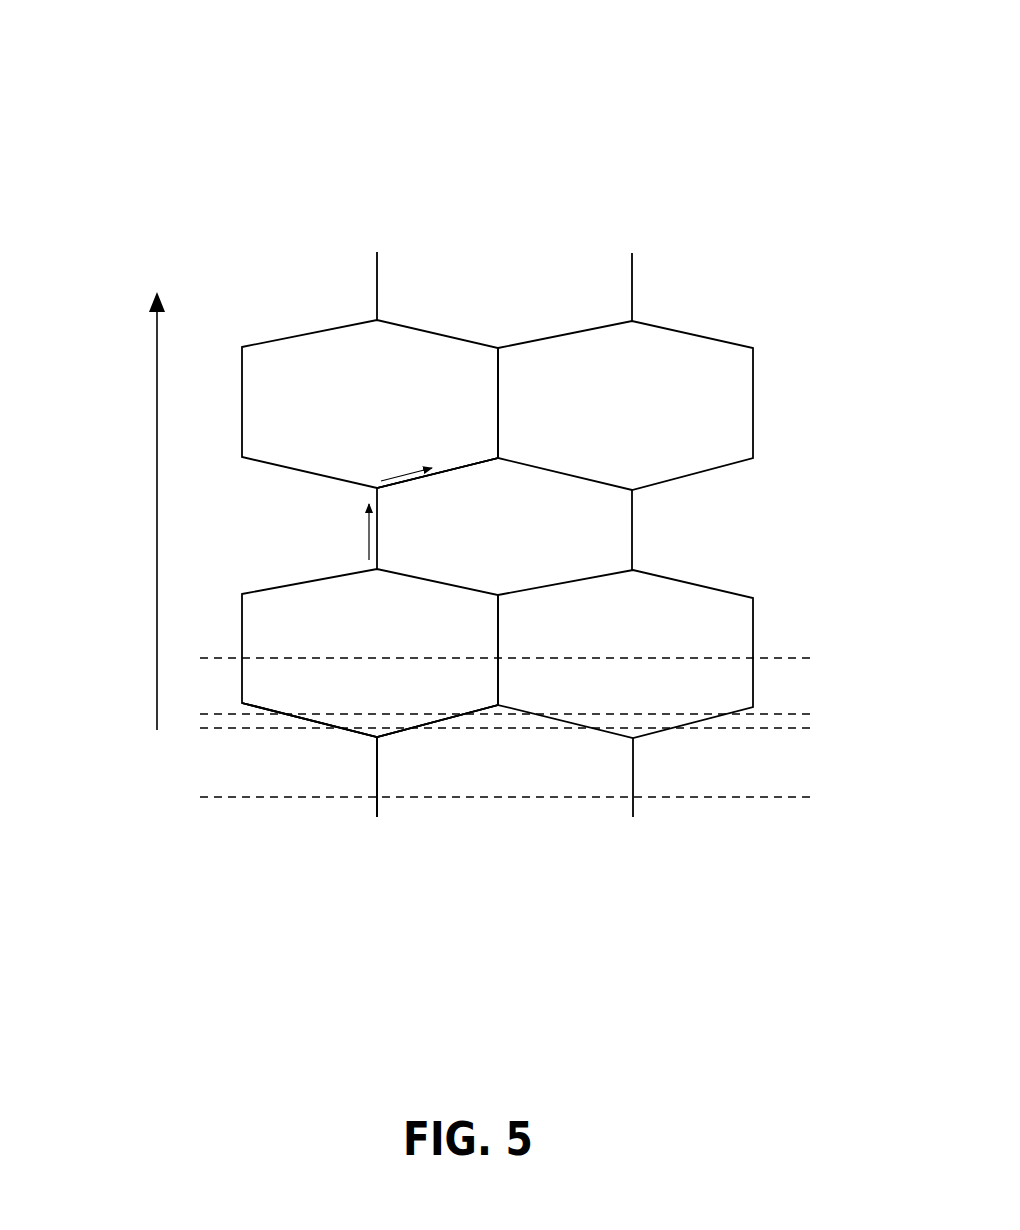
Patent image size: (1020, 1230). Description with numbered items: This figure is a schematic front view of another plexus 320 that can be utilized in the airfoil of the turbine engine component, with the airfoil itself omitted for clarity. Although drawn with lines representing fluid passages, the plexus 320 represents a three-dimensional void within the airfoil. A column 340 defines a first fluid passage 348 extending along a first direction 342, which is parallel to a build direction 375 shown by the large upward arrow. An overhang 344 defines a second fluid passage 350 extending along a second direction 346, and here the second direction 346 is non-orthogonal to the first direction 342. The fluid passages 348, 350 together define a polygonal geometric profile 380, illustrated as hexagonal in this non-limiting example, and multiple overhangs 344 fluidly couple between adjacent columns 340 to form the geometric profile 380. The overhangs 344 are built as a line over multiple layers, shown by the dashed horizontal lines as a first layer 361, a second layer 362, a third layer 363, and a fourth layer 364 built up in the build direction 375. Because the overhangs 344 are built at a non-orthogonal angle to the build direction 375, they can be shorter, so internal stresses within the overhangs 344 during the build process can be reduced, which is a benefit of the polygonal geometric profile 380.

The plexus 320 is at (806, 102).
The column 340 is at (498, 413).
The first direction 342 is at (368, 530).
The overhang 344 is at (455, 470).
The second direction 346 is at (396, 478).
The first fluid passage 348 is at (492, 387).
The second fluid passage 350 is at (399, 488).
The first layer 361 is at (813, 797).
The second layer 362 is at (813, 728).
The third layer 363 is at (813, 714).
The fourth layer 364 is at (813, 658).
The build direction 375 is at (155, 357).
The polygonal geometric profile 380 is at (327, 358).